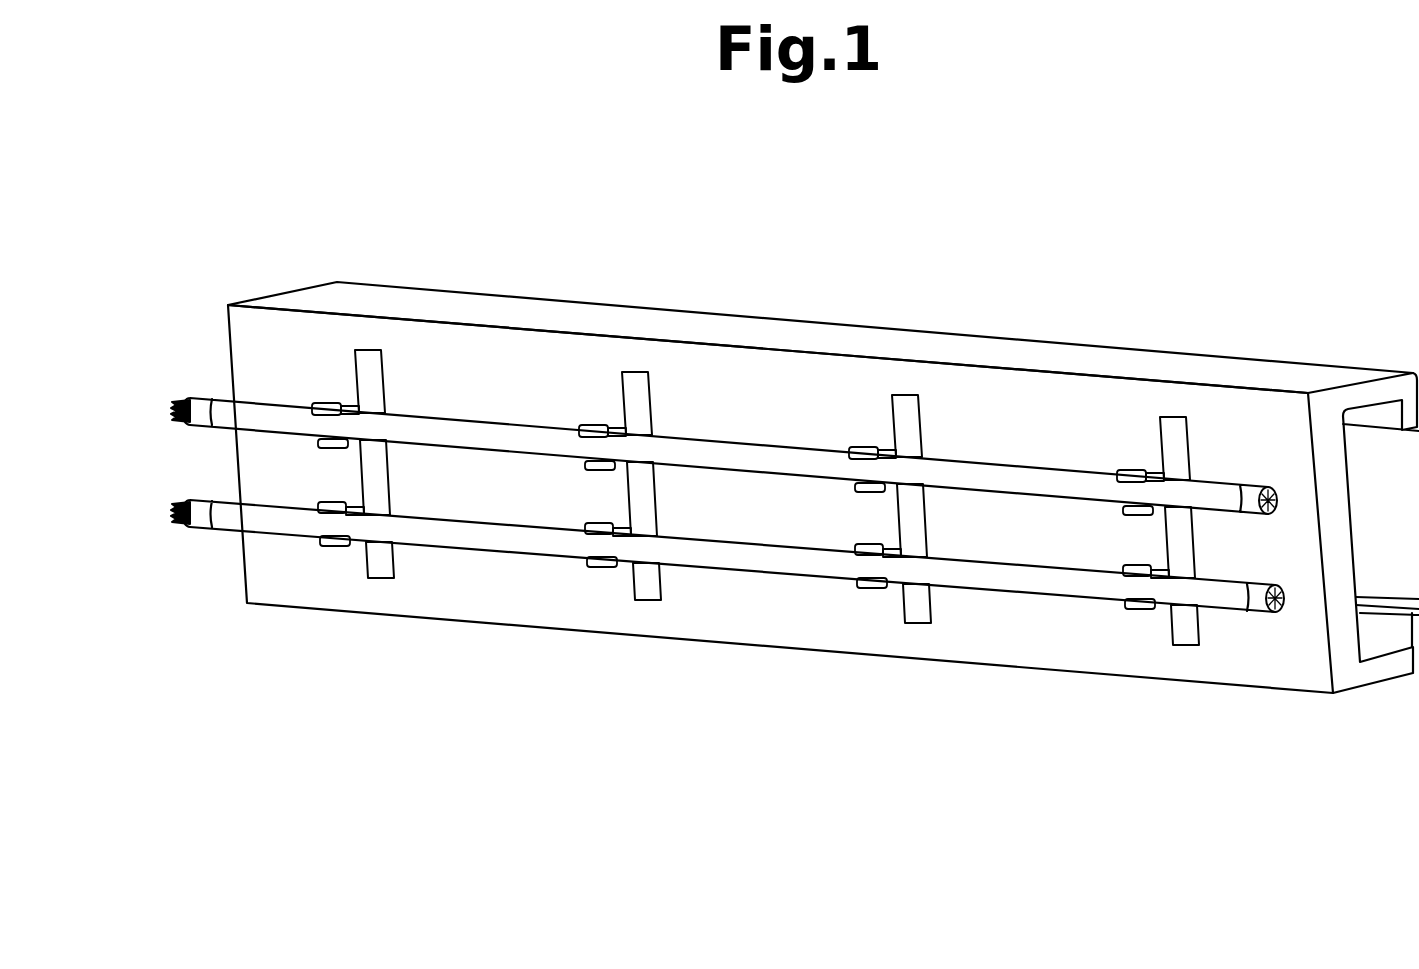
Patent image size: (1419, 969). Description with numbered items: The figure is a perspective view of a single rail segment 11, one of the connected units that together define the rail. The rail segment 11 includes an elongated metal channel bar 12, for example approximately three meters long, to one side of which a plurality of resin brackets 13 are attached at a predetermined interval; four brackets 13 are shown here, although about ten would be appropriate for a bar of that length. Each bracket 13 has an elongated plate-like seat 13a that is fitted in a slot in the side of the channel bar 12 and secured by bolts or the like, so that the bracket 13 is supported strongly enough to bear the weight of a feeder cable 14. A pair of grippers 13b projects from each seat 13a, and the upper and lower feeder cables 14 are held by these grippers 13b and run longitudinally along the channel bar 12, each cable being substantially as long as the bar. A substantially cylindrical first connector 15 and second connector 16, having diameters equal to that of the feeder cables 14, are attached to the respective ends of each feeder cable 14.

The rail segment 11 is at (828, 310).
The channel bar 12 is at (1117, 357).
The bracket 13 is at (369, 372).
The seat 13a is at (385, 558).
The gripper 13b is at (333, 442).
The feeder cable 14 is at (766, 448).
The first connector 15 is at (1255, 513).
The second connector 16 is at (198, 417).